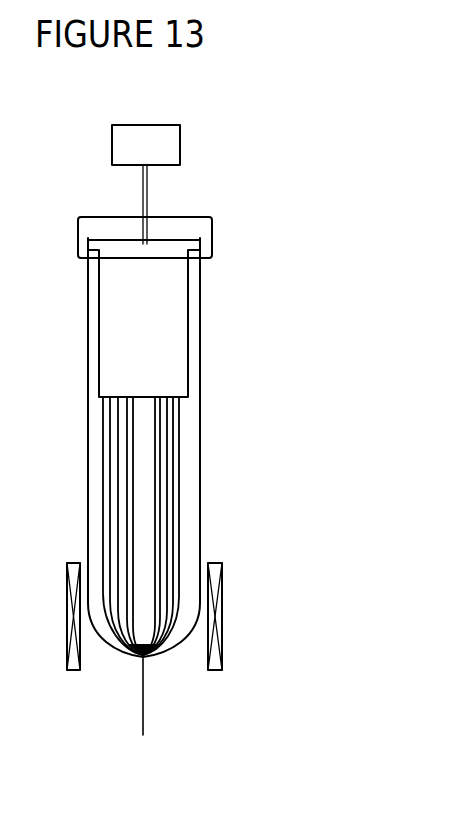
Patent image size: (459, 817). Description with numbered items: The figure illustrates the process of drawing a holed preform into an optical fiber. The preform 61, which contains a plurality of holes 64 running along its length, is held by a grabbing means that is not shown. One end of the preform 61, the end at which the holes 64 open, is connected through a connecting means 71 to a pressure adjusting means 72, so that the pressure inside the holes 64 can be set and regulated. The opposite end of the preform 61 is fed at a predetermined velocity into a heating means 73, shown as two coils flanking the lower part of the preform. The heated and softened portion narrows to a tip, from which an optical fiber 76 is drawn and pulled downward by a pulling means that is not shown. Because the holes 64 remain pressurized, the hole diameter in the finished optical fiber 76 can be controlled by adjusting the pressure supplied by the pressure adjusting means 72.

The pressure adjusting means 72 is at (172, 140).
The connecting means 71 is at (233, 170).
The preform 61 is at (198, 433).
The holes 64 is at (182, 485).
The heating means 73 is at (222, 565).
The optical fiber 76 is at (145, 718).